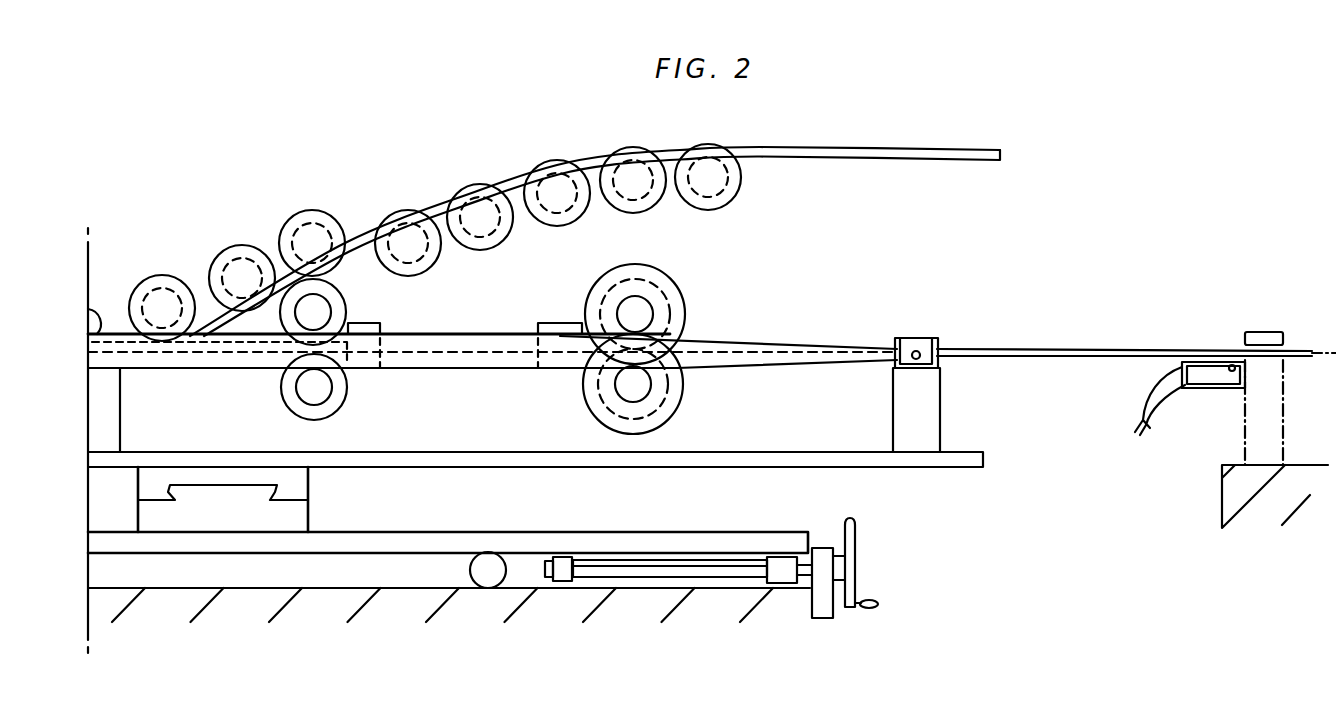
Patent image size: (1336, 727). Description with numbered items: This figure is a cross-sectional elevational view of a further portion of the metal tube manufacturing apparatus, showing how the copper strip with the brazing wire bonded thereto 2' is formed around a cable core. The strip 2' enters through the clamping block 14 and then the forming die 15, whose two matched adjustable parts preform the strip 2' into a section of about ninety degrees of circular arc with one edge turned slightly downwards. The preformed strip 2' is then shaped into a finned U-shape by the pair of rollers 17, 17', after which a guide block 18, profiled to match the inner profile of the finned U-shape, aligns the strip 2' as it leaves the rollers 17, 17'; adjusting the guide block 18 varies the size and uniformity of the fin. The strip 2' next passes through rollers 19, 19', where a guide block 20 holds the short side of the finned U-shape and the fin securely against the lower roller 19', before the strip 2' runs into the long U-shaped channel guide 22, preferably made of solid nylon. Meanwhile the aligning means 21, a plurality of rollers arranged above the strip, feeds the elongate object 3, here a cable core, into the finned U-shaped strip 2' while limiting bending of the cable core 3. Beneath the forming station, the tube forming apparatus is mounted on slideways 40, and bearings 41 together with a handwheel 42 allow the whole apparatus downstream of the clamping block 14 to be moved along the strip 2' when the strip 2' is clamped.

The copper strip with brazing wire bonded thereto 2' is at (1136, 320).
The elongate object 3 is at (913, 150).
The clamping block 14 is at (1273, 332).
The forming die 15 is at (922, 338).
The roller 17 is at (662, 293).
The roller 17' is at (675, 384).
The guide block 18 is at (563, 324).
The roller 19 is at (369, 310).
The lower roller 19' is at (367, 387).
The guide block 20 is at (381, 323).
The means for aligning an elongate object 21 is at (467, 188).
The U-shaped channel guide 22 is at (110, 424).
The slideways 40 is at (296, 485).
The bearings 41 is at (492, 566).
The handwheel 42 is at (852, 524).